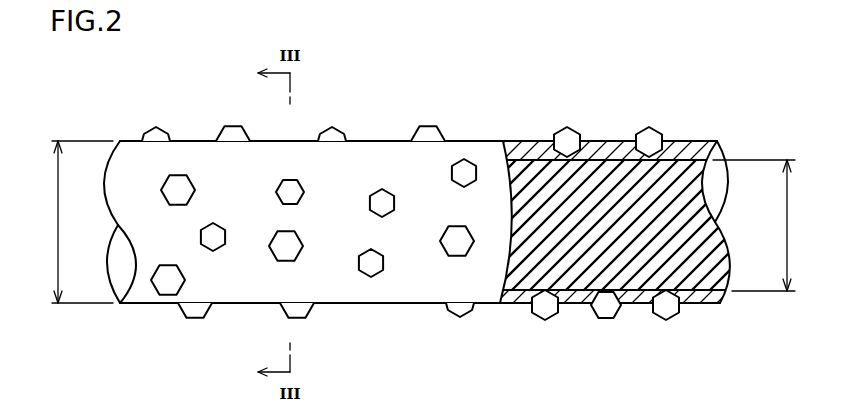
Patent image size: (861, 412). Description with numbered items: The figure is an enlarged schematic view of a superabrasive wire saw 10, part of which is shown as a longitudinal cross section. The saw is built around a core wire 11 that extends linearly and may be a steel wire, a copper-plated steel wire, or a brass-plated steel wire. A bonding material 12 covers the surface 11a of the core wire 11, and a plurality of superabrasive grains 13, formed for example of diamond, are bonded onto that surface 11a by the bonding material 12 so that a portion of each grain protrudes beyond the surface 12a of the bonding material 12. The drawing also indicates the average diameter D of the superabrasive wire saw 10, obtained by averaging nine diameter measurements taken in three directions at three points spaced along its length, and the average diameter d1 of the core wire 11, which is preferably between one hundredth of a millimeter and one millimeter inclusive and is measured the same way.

The superabrasive wire saw 10 is at (713, 95).
The core wire 11 is at (677, 187).
The surface of core wire 11a is at (690, 299).
The bonding material 12 is at (621, 146).
The surface of bonding material 12a is at (199, 140).
The superabrasive grains 13 is at (567, 130).
The average diameter of superabrasive wire saw D is at (73, 222).
The average diameter of core wire d1 is at (765, 225).